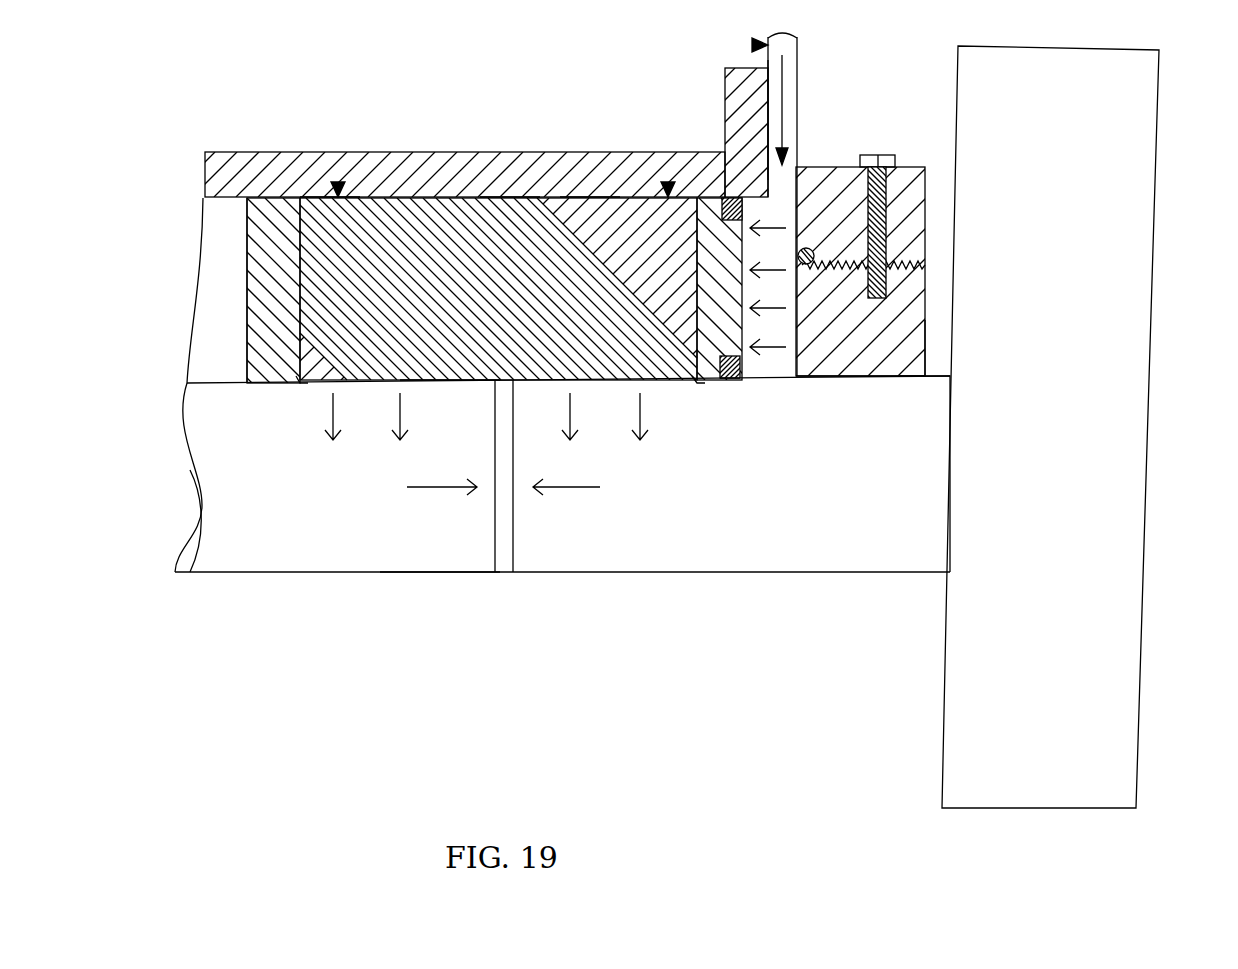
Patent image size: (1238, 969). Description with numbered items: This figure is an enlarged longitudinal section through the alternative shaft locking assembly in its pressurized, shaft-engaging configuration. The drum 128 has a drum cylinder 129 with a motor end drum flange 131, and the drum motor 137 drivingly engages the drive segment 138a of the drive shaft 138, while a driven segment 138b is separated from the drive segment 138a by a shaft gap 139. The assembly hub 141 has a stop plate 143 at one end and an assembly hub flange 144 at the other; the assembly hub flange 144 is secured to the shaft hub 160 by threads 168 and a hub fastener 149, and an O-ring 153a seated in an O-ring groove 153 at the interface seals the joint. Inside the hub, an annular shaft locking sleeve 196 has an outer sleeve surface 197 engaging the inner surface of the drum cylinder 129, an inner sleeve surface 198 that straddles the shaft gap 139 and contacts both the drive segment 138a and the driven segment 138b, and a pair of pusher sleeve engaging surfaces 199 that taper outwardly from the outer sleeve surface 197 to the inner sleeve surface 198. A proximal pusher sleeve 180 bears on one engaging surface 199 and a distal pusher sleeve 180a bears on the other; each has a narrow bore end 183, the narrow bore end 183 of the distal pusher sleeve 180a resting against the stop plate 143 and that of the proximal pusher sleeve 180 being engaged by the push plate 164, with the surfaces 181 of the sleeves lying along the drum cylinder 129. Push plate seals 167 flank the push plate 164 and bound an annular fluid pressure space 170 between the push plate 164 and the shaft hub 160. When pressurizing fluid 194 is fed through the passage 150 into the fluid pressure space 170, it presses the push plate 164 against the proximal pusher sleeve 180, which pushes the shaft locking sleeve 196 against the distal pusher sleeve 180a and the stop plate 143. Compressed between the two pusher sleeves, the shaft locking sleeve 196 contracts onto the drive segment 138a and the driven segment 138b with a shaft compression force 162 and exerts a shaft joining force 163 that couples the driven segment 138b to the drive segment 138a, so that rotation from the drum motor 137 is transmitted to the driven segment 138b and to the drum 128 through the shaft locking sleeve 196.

The drum 128 is at (752, 45).
The drum cylinder 129 is at (395, 165).
The motor end drum flange 131 is at (735, 88).
The drum motor 137 is at (1128, 298).
The drive shaft 138 is at (355, 575).
The drive segment 138a is at (918, 502).
The driven segment 138b is at (445, 548).
The shaft gap 139 is at (500, 438).
The assembly hub 141 is at (236, 275).
The stop plate 143 is at (260, 235).
The assembly hub flange 144 is at (915, 172).
The hub fastener 149 is at (880, 155).
The gas conduit 150 is at (797, 78).
The O-ring groove 153 is at (796, 330).
The O-ring 153a is at (880, 255).
The shaft hub 160 is at (915, 350).
The shaft compression force 162 is at (345, 405).
The shaft joining force 163 is at (447, 490).
The push plate 164 is at (722, 395).
The push plate seals 167 is at (745, 212).
The threads 168 is at (814, 254).
The fluid pressure space 170 is at (862, 378).
The proximal pusher sleeve 180 is at (668, 182).
The distal pusher sleeve 180a is at (338, 182).
The platen surface 181 is at (330, 153).
The narrow bore end 183 is at (300, 383).
The pressurizing fluid 194 is at (800, 50).
The shaft locking sleeve 196 is at (500, 185).
The outer sleeve surface 197 is at (500, 197).
The inner sleeve surface 198 is at (510, 385).
The pusher sleeve engaging surfaces 199 is at (437, 215).